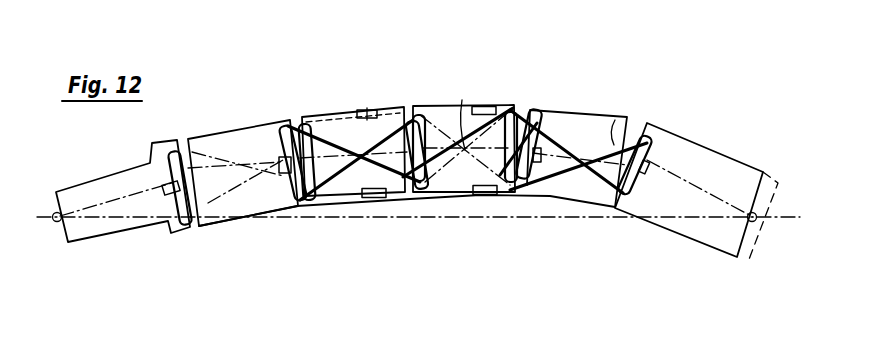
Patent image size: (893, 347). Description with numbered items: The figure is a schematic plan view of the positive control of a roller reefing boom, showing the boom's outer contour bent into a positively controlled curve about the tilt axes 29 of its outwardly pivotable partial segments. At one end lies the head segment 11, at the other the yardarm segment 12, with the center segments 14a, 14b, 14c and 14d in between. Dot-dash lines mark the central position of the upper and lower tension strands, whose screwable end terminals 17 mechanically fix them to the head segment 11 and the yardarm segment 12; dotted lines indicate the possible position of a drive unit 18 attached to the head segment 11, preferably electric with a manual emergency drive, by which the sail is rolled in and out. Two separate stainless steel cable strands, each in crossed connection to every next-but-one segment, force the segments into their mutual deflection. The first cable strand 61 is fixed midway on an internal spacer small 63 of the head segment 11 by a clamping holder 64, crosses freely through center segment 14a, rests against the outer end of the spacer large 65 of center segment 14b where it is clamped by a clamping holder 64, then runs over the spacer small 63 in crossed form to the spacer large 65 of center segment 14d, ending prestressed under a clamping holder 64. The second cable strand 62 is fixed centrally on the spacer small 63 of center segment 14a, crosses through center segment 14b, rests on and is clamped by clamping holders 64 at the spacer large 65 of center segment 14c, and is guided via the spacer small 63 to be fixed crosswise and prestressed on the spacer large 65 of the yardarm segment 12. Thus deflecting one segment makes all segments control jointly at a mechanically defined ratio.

The yardarm segment 12 is at (110, 186).
The center segment 14a is at (591, 194).
The center segment 14b is at (447, 193).
The center segment 14c is at (337, 200).
The center segment 14d is at (223, 227).
The head segment 11 is at (713, 243).
The end terminals 17 is at (54, 225).
The drive unit 18 is at (772, 217).
The tilt axes 29 is at (367, 110).
The first cable strand 61 is at (615, 120).
The second cable strand 62 is at (462, 100).
The spacer small 63 is at (330, 122).
The clamping holder 64 is at (538, 147).
The spacer large 65 is at (287, 130).